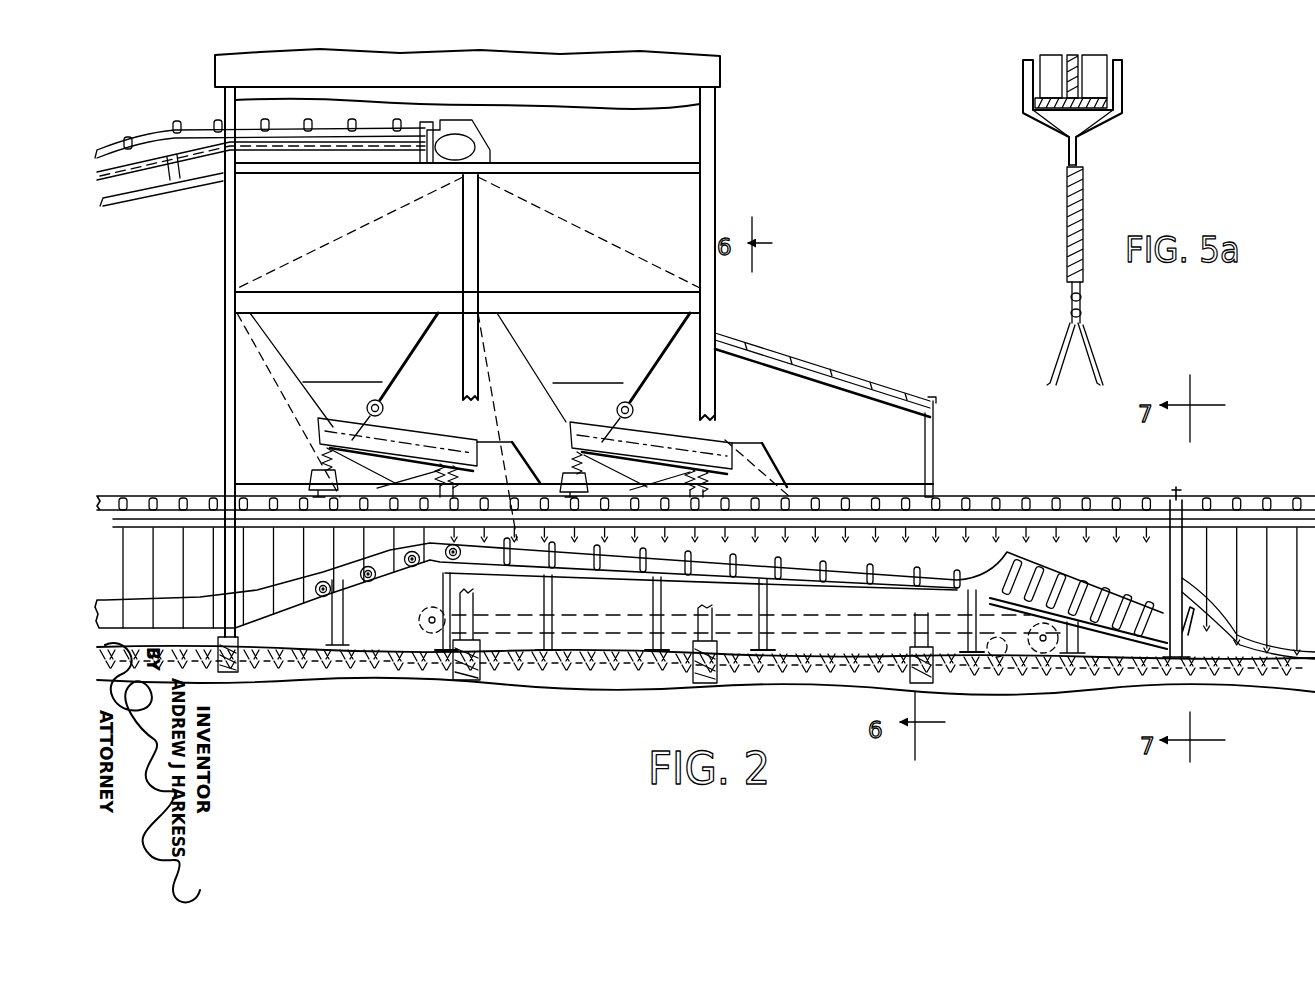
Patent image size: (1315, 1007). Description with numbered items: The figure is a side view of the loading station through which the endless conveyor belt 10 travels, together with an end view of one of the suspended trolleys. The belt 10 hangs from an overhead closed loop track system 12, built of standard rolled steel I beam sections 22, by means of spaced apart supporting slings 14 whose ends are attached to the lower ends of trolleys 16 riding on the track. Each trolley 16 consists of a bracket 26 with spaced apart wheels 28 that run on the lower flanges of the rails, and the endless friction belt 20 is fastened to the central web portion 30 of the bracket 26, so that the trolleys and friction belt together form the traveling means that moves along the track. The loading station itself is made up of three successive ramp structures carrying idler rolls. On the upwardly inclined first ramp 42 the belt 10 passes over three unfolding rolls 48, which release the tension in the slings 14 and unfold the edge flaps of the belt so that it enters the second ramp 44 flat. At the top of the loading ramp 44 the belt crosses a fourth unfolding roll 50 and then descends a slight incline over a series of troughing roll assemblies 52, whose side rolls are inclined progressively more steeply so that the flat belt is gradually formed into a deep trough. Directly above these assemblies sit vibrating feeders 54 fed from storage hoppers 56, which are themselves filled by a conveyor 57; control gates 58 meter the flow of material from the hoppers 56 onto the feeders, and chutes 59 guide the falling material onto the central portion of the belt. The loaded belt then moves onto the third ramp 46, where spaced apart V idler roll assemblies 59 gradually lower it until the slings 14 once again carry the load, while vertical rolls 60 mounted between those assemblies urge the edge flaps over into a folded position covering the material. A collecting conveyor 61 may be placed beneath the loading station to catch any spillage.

In FIG. 2, the endless conveyor belt 10 is at (263, 614).
In FIG. 2, the overhead closed loop track system 12 is at (706, 538).
In FIG. 5a, the supporting slings 14 is at (1090, 362).
In FIG. 2, the trolleys 16 is at (1247, 507).
In FIG. 5a, the trolleys 16 is at (1017, 124).
In FIG. 2, the endless friction belt 20 is at (1219, 528).
In FIG. 5a, the endless friction belt 20 is at (1068, 202).
In FIG. 2, the I beam sections 22 is at (1104, 497).
In FIG. 5a, the brackets 26 is at (1128, 112).
In FIG. 2, the wheels 28 is at (1267, 505).
In FIG. 5a, the wheels 28 is at (1048, 73).
In FIG. 5a, the central web portion 30 is at (1080, 150).
In FIG. 2, the first ramp 42 is at (368, 594).
In FIG. 2, the second ramp 44 is at (630, 594).
In FIG. 2, the third ramp 46 is at (1117, 642).
In FIG. 2, the unfolding rolls 48 is at (322, 593).
In FIG. 2, the fourth unfolding roll 50 is at (461, 560).
In FIG. 2, the troughing roll assemblies 52 is at (597, 560).
In FIG. 2, the vibrating feeders 54 is at (408, 433).
In FIG. 2, the hoppers 56 is at (362, 354).
In FIG. 2, the conveyor 57 is at (355, 152).
In FIG. 2, the control gates 58 is at (386, 402).
In FIG. 2, the V idler roll assemblies 59 is at (503, 450).
In FIG. 2, the vertical rolls 60 is at (1040, 573).
In FIG. 2, the collecting conveyor 61 is at (826, 634).